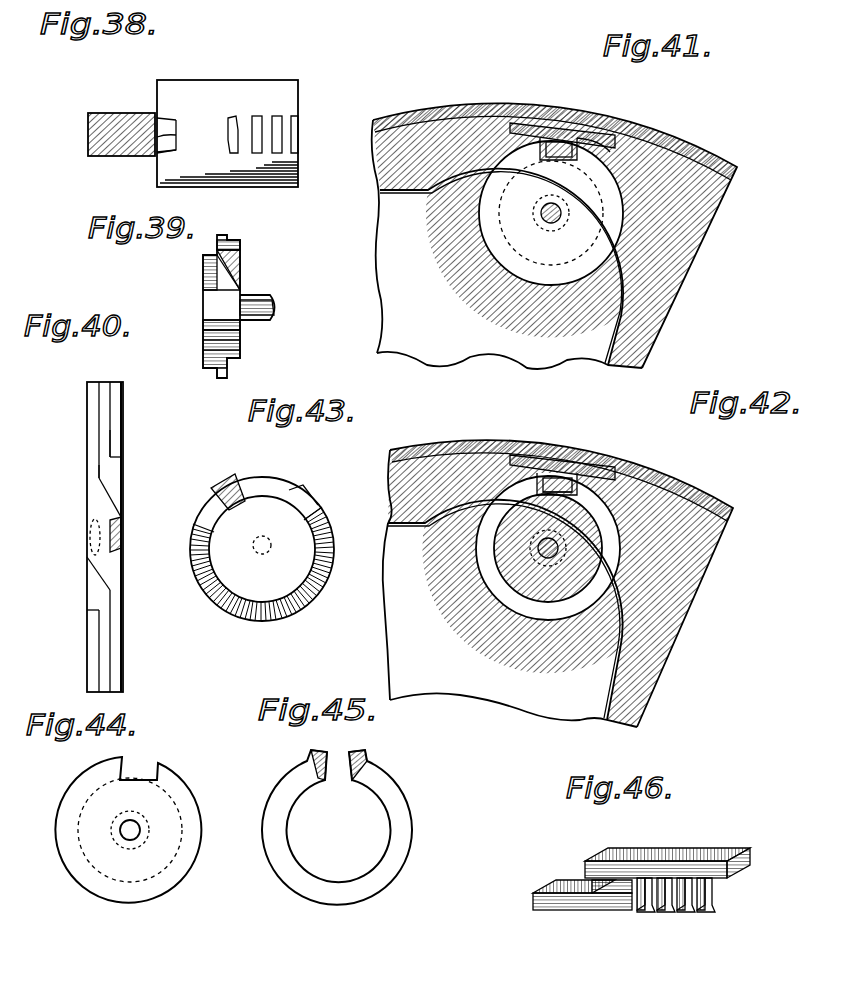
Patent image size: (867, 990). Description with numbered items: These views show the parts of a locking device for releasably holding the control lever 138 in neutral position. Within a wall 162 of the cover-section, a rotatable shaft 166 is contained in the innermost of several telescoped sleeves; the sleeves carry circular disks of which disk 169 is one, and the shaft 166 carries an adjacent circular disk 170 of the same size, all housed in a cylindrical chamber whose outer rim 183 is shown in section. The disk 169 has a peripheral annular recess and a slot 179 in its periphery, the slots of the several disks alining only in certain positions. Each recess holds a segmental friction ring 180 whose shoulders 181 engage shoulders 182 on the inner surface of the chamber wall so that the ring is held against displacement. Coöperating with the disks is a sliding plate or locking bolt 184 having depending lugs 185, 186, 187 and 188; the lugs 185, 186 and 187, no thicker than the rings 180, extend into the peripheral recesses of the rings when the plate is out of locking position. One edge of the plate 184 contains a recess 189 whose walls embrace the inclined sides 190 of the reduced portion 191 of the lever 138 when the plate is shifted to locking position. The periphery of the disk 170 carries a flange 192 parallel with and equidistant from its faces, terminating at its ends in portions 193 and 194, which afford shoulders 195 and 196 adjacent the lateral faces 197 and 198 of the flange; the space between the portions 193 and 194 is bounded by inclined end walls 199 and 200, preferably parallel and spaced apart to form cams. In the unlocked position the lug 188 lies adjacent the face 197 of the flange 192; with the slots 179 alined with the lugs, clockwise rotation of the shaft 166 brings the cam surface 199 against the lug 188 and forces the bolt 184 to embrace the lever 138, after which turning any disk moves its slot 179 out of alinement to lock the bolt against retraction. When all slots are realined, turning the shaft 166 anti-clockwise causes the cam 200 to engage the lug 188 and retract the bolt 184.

In FIG. 38, the control lever 138 is at (88, 131).
In FIG. 41, the wall 162 is at (620, 248).
In FIG. 42, the wall 162 is at (610, 598).
In FIG. 39, the rotatable shaft 166 is at (262, 302).
In FIG. 43, the rotatable shaft 166 is at (268, 554).
In FIG. 41, the rotatable shaft 166 is at (547, 204).
In FIG. 42, the rotatable shaft 166 is at (540, 552).
In FIG. 41, the circular disk 169 is at (606, 205).
In FIG. 42, the circular disk 169 is at (595, 570).
In FIG. 44, the circular disk 169 is at (188, 800).
In FIG. 39, the circular disk 170 is at (205, 312).
In FIG. 40, the circular disk 170 is at (88, 540).
In FIG. 43, the circular disk 170 is at (262, 497).
In FIG. 41, the slot 179 is at (596, 140).
In FIG. 42, the friction ring 180 is at (612, 536).
In FIG. 45, the friction ring 180 is at (402, 820).
In FIG. 42, the shoulder 181 is at (546, 478).
In FIG. 45, the shoulder 181 is at (339, 780).
In FIG. 41, the shoulder 182 is at (548, 138).
In FIG. 42, the shoulder 182 is at (540, 478).
In FIG. 41, the rim 183 is at (653, 140).
In FIG. 42, the rim 183 is at (688, 490).
In FIG. 38, the sliding plate 184 is at (262, 92).
In FIG. 41, the sliding plate 184 is at (520, 122).
In FIG. 42, the sliding plate 184 is at (557, 460).
In FIG. 46, the sliding plate 184 is at (728, 849).
In FIG. 46, the depending lug 185 is at (710, 914).
In FIG. 46, the depending lug 186 is at (686, 914).
In FIG. 41, the depending lug 187 is at (562, 155).
In FIG. 42, the depending lug 187 is at (560, 484).
In FIG. 46, the depending lug 187 is at (666, 914).
In FIG. 40, the lug 188 is at (122, 537).
In FIG. 46, the lug 188 is at (642, 918).
In FIG. 38, the recess 189 is at (168, 145).
In FIG. 46, the recess 189 is at (578, 886).
In FIG. 38, the inclined side 190 is at (155, 115).
In FIG. 38, the reduced portion 191 is at (157, 137).
In FIG. 39, the flange 192 is at (223, 235).
In FIG. 40, the flange 192 is at (100, 395).
In FIG. 43, the flange 192 is at (270, 616).
In FIG. 39, the end portion 193 is at (232, 256).
In FIG. 40, the end portion 193 is at (113, 483).
In FIG. 39, the end portion 194 is at (205, 358).
In FIG. 40, the end portion 194 is at (95, 596).
In FIG. 39, the shoulder 195 is at (240, 248).
In FIG. 40, the shoulder 195 is at (115, 456).
In FIG. 39, the shoulder 196 is at (218, 372).
In FIG. 40, the shoulder 196 is at (92, 615).
In FIG. 43, the shoulder 196 is at (322, 530).
In FIG. 39, the lateral face 197 is at (235, 240).
In FIG. 40, the lateral face 197 is at (112, 431).
In FIG. 39, the lateral face 198 is at (215, 251).
In FIG. 40, the lateral face 198 is at (100, 431).
In FIG. 43, the lateral face 198 is at (232, 610).
In FIG. 39, the inclined surface 199 is at (220, 270).
In FIG. 40, the inclined surface 199 is at (105, 487).
In FIG. 43, the inclined surface 199 is at (228, 480).
In FIG. 39, the inclined surface 200 is at (238, 331).
In FIG. 40, the inclined surface 200 is at (105, 580).